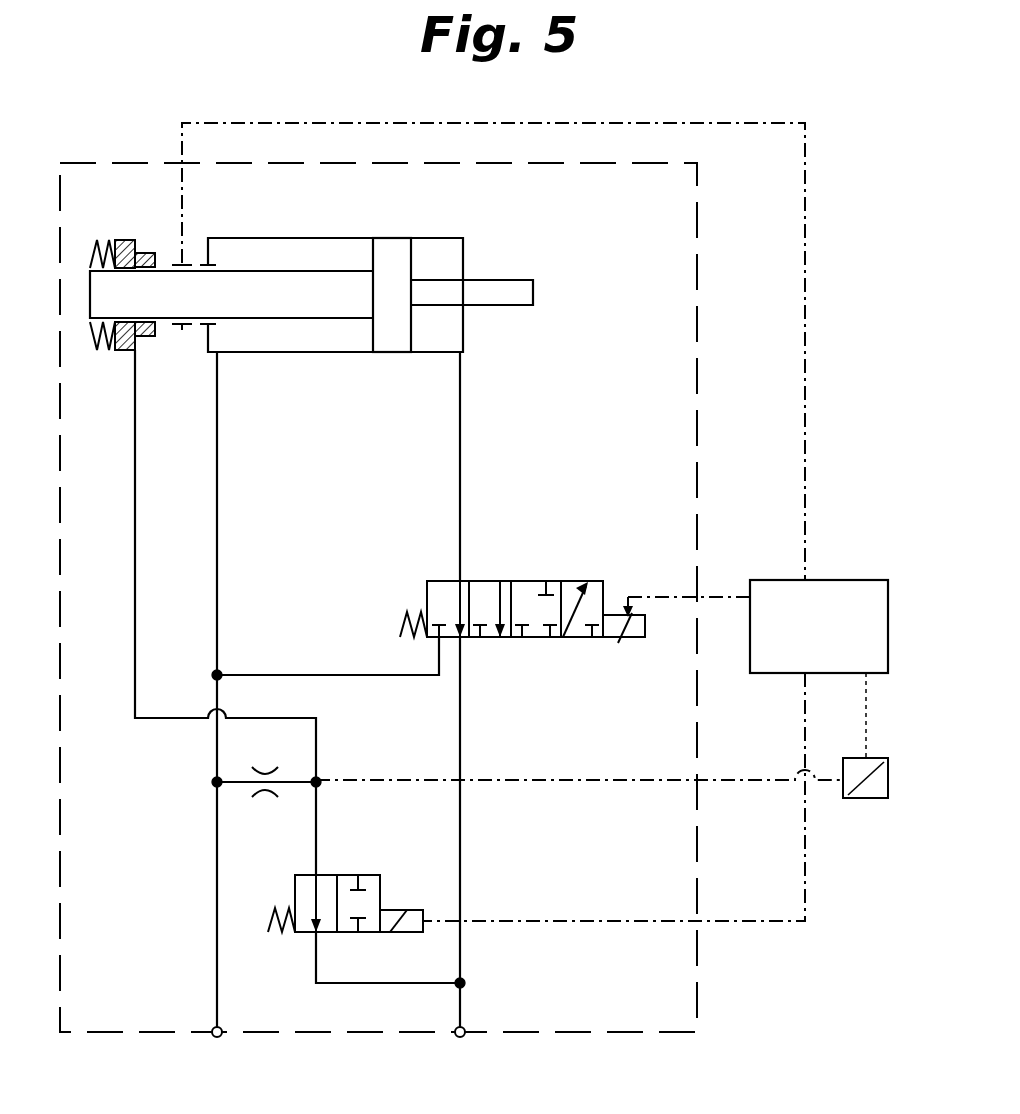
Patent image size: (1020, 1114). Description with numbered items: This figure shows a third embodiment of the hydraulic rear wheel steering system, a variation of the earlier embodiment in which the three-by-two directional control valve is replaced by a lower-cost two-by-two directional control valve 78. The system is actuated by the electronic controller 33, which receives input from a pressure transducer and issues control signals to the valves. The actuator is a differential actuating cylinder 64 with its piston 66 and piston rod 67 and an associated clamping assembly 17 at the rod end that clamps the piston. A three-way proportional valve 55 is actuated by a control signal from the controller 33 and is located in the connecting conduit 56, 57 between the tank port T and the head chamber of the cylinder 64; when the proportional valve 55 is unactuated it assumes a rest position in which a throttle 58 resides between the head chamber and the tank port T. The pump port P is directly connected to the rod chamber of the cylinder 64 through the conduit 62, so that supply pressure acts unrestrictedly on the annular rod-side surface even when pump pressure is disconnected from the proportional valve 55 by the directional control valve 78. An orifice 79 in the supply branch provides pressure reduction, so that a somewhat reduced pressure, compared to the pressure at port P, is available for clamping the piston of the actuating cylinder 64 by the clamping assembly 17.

The clamping assembly 17 is at (121, 352).
The differential actuating cylinder 64 is at (336, 232).
The piston 66 is at (331, 354).
The piston rod 67 is at (456, 248).
The conduit 62 is at (219, 482).
The connecting conduit 57 is at (462, 453).
The connecting conduit 56 is at (462, 722).
The three-way proportional valve 55 is at (548, 575).
The throttle 58 is at (460, 601).
The orifice 79 is at (265, 796).
The 2/2 directional control valve 78 is at (384, 868).
The electronic controller 33 is at (847, 583).